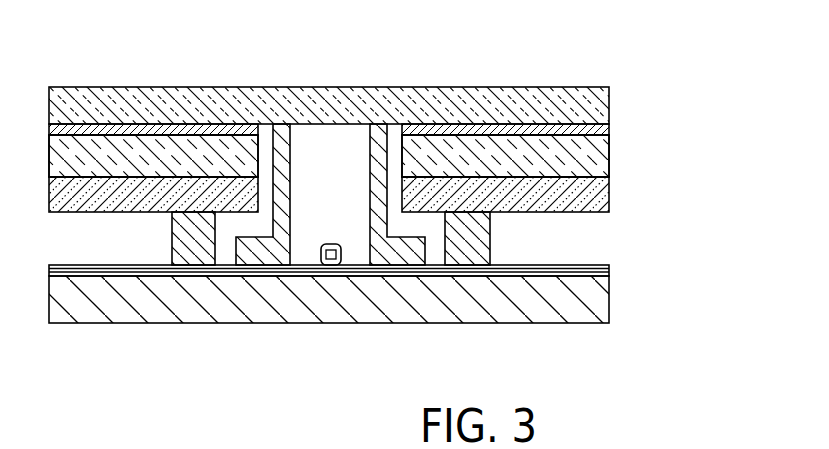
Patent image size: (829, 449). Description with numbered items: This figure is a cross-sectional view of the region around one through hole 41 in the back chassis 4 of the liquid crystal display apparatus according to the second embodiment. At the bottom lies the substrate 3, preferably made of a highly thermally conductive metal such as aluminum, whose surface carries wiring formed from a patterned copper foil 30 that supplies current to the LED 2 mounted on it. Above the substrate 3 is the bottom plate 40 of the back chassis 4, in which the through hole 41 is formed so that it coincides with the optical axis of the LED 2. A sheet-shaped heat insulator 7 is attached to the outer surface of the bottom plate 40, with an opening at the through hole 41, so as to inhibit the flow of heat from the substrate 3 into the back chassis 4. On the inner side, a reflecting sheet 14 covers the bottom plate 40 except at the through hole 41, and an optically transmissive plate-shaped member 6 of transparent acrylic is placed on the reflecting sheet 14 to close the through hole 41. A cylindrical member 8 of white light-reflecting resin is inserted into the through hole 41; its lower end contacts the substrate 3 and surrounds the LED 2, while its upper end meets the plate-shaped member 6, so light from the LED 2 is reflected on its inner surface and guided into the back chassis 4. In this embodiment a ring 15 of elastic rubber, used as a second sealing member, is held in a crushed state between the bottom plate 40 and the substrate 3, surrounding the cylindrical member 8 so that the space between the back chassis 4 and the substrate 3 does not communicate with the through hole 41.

The LED 2 is at (343, 267).
The substrate 3 is at (480, 310).
The back chassis 4 is at (384, 172).
The bottom plate 40 is at (609, 163).
The plate-shaped member 6 is at (220, 87).
The heat insulator 7 is at (585, 213).
The cylindrical member 8 is at (420, 247).
The reflecting sheet 14 is at (609, 130).
The ring 15 is at (172, 243).
The patterned copper foil 30 is at (609, 272).
The through hole 41 is at (388, 136).